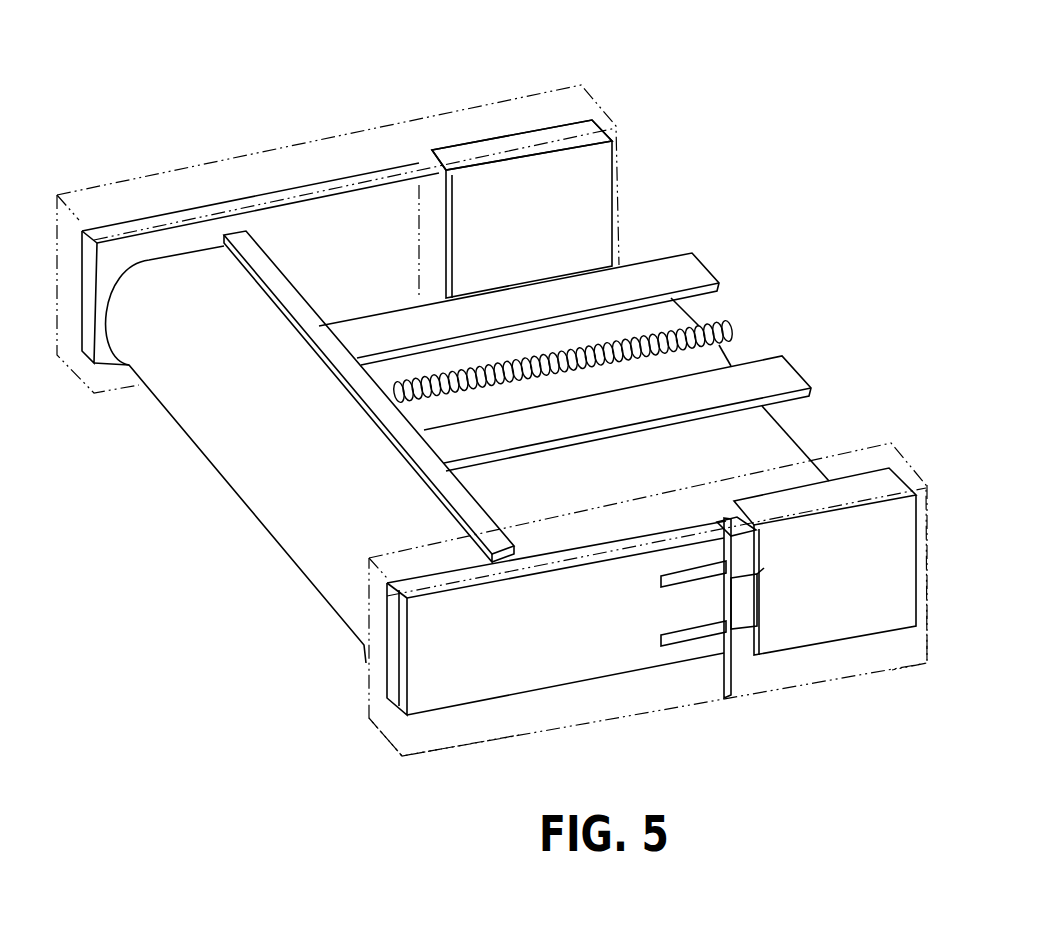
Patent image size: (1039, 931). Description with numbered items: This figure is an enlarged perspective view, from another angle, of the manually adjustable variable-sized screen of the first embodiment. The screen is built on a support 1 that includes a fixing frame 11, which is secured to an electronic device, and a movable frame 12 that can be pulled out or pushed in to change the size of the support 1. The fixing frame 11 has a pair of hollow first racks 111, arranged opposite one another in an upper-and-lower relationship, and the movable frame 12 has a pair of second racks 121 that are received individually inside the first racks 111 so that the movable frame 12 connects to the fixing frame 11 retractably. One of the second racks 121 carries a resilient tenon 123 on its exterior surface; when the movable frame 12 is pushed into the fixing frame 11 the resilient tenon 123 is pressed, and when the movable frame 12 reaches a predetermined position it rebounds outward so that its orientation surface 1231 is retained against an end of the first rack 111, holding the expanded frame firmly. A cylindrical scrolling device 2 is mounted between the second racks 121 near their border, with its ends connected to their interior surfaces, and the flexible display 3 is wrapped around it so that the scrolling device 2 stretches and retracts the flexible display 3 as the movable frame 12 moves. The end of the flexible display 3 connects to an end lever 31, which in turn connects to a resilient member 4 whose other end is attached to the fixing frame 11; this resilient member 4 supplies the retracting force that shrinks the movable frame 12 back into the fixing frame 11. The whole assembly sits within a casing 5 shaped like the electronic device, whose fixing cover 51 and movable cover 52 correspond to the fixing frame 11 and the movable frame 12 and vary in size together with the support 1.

The support 1 is at (636, 162).
The fixing frame 11 is at (506, 113).
The first rack 111 is at (577, 130).
The movable frame 12 is at (234, 178).
The second rack 121 is at (147, 223).
The resilient tenon 123 is at (702, 610).
The orientation surface 1231 is at (763, 603).
The scrolling device 2 is at (262, 481).
The flexible display 3 is at (792, 439).
The end lever 31 is at (420, 448).
The resilient member 4 is at (722, 321).
The casing 5 is at (488, 755).
The fixing cover 51 is at (913, 667).
The movable cover 52 is at (437, 760).